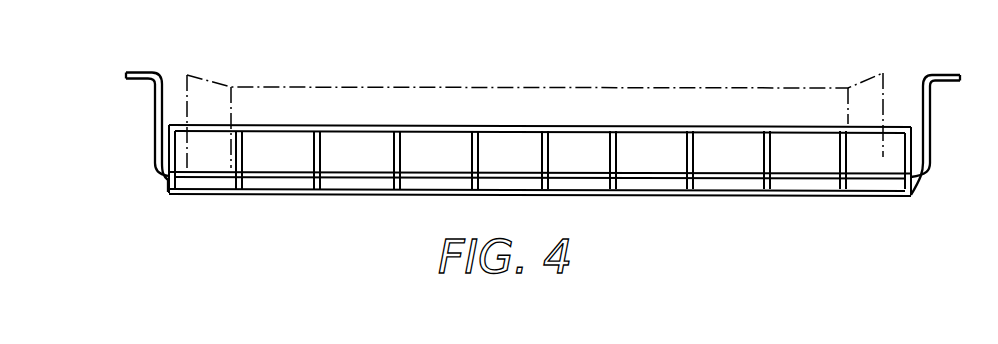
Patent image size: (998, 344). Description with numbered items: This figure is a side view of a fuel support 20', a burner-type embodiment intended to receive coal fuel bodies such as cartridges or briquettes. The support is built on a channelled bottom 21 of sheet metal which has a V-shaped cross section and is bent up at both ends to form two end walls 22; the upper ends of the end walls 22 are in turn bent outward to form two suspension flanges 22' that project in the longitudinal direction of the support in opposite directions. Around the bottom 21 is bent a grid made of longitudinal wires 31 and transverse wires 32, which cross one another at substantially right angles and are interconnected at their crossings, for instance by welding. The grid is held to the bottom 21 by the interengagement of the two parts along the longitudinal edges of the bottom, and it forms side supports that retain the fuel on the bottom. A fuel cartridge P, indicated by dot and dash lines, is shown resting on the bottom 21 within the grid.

The fuel support 20' is at (540, 141).
The channelled bottom 21 is at (863, 185).
The end wall 22 is at (545, 139).
The suspension flange 22' is at (554, 58).
The longitudinal wire 31 is at (338, 124).
The transverse wire 32 is at (400, 152).
The fuel cartridge P is at (772, 96).